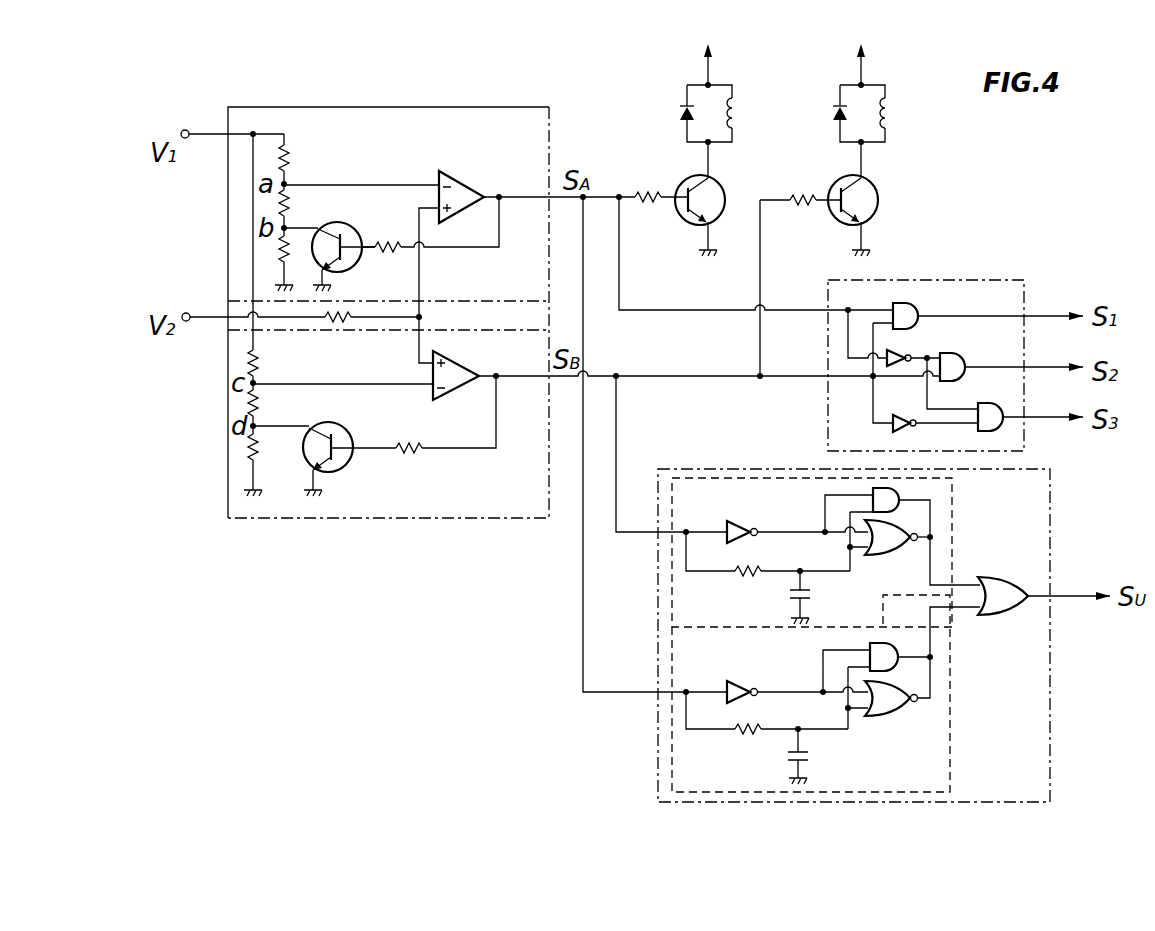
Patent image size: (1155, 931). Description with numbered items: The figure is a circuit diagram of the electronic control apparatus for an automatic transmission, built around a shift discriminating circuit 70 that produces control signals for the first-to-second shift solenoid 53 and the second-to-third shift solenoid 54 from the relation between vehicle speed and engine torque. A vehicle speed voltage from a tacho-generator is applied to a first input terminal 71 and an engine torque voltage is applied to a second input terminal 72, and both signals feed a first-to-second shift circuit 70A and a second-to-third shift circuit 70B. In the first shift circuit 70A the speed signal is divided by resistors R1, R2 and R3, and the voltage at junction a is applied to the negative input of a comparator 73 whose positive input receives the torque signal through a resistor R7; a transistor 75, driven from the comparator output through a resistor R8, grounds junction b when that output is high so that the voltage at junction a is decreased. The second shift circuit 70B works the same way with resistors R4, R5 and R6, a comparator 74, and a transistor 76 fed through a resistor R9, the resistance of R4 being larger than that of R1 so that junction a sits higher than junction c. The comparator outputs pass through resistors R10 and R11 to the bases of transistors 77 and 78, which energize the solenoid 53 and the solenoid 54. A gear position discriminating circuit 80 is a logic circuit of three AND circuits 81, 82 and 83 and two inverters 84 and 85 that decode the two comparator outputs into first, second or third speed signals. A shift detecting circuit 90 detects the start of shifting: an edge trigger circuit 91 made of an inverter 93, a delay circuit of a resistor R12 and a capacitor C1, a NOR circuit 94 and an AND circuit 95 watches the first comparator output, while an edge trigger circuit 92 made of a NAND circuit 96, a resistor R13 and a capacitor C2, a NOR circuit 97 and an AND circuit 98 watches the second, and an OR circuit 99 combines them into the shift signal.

The shift discriminating circuit 70 is at (443, 107).
The 1-2 shift circuit 70A is at (441, 151).
The 2-3 shift circuit 70B is at (459, 506).
The first input terminal 71 is at (189, 131).
The second input terminal 72 is at (209, 297).
The comparator 73 is at (467, 186).
The comparator 74 is at (462, 366).
The transistor 75 is at (346, 224).
The transistor 76 is at (340, 424).
The transistor 77 is at (722, 192).
The transistor 78 is at (875, 192).
The 1-2 shift solenoid 53 is at (736, 103).
The 2-3 shift solenoid 54 is at (890, 112).
The gear position discriminating circuit 80 is at (950, 280).
The AND circuit 81 is at (918, 303).
The AND circuit 82 is at (957, 352).
The AND circuit 83 is at (1000, 394).
The inverter 84 is at (893, 352).
The inverter 85 is at (893, 431).
The shift detecting circuit 90 is at (1050, 492).
The edge trigger circuit 91 is at (952, 558).
The edge trigger circuit 92 is at (950, 690).
The inverter 93 is at (740, 522).
The NOR circuit 94 is at (905, 526).
The AND circuit 95 is at (903, 490).
The NAND circuit 96 is at (742, 682).
The NOR circuit 97 is at (893, 716).
The AND circuit 98 is at (890, 647).
The OR circuit 99 is at (995, 615).
The resistor R1 is at (300, 155).
The resistor R2 is at (300, 201).
The resistor R3 is at (284, 262).
The resistor R4 is at (272, 361).
The resistor R5 is at (272, 405).
The resistor R6 is at (271, 450).
The resistor R7 is at (338, 322).
The resistor R8 is at (385, 263).
The resistor R9 is at (423, 434).
The resistor R10 is at (660, 185).
The resistor R11 is at (814, 186).
The resistor R12 is at (741, 590).
The resistor R13 is at (741, 748).
The capacitor C1 is at (812, 598).
The capacitor C2 is at (810, 760).